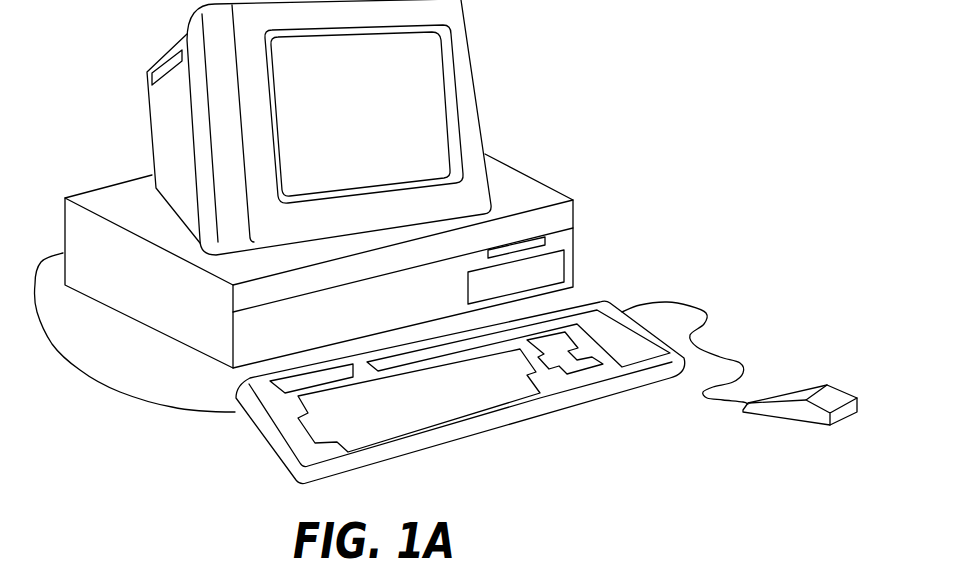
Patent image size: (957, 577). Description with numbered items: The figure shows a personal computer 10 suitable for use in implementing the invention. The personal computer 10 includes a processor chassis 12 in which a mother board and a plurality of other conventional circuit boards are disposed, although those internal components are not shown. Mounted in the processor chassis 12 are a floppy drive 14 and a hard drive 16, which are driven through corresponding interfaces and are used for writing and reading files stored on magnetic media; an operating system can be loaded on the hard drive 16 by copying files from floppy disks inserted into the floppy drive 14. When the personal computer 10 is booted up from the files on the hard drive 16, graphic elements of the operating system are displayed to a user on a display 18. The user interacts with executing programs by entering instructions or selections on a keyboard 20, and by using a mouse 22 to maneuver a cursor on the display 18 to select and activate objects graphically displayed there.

The personal computer 10 is at (464, 269).
The processor chassis 12 is at (553, 237).
The floppy drive 14 is at (522, 240).
The hard drive 16 is at (542, 269).
The display 18 is at (472, 66).
The keyboard 20 is at (565, 409).
The mouse 22 is at (832, 426).